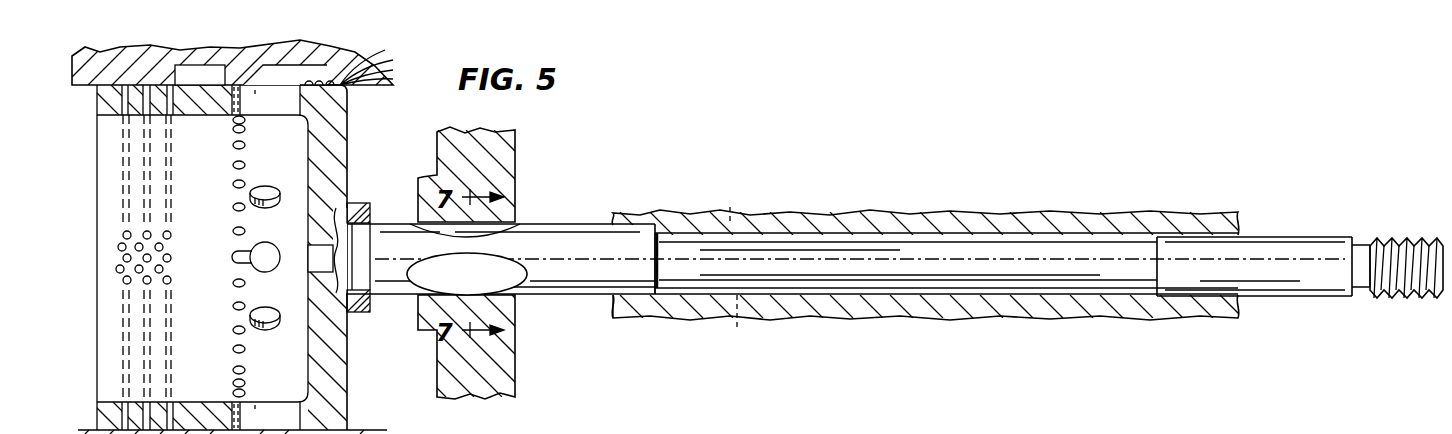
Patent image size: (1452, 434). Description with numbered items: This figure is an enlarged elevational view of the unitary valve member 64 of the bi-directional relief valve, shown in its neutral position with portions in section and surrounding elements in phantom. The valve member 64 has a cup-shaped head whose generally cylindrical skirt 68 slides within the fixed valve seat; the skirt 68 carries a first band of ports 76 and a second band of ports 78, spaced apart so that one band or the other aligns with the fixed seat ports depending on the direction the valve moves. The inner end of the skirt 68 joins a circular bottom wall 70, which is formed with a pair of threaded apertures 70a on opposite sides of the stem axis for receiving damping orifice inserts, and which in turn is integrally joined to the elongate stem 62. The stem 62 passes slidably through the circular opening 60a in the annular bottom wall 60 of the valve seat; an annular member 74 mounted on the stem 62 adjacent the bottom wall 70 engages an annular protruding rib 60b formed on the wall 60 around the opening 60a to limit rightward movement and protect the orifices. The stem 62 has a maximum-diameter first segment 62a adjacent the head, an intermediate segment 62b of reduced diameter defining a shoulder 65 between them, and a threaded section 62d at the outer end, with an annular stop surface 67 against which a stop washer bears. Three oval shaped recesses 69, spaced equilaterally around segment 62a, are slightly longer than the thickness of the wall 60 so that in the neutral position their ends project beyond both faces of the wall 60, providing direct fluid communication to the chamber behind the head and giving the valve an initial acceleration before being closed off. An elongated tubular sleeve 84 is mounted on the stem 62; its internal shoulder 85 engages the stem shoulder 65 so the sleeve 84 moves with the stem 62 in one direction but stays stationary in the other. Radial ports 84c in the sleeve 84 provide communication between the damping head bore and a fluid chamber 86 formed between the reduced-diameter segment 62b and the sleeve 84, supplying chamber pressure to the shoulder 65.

The bottom wall 60 is at (493, 170).
The circular opening 60a is at (512, 212).
The annular protruding rib 60b is at (427, 330).
The elongate stem 62 is at (895, 253).
The first segment 62a is at (632, 240).
The intermediate segment 62b is at (893, 252).
The threaded section 62d is at (1412, 242).
The valve member 64 is at (353, 133).
The shoulder 65 is at (667, 250).
The annular stop surface 67 is at (1358, 247).
The cylindrical skirt 68 is at (100, 424).
The oval shaped recesses 69 is at (418, 200).
The bottom wall 70 is at (335, 348).
The threaded apertures 70a is at (340, 80).
The annular member 74 is at (360, 203).
The first band of ports 76 is at (116, 269).
The second band of ports 78 is at (232, 128).
The tubular sleeve 84 is at (916, 266).
The radial ports 84c is at (731, 207).
The internal shoulder 85 is at (650, 297).
The fluid chamber 86 is at (890, 288).